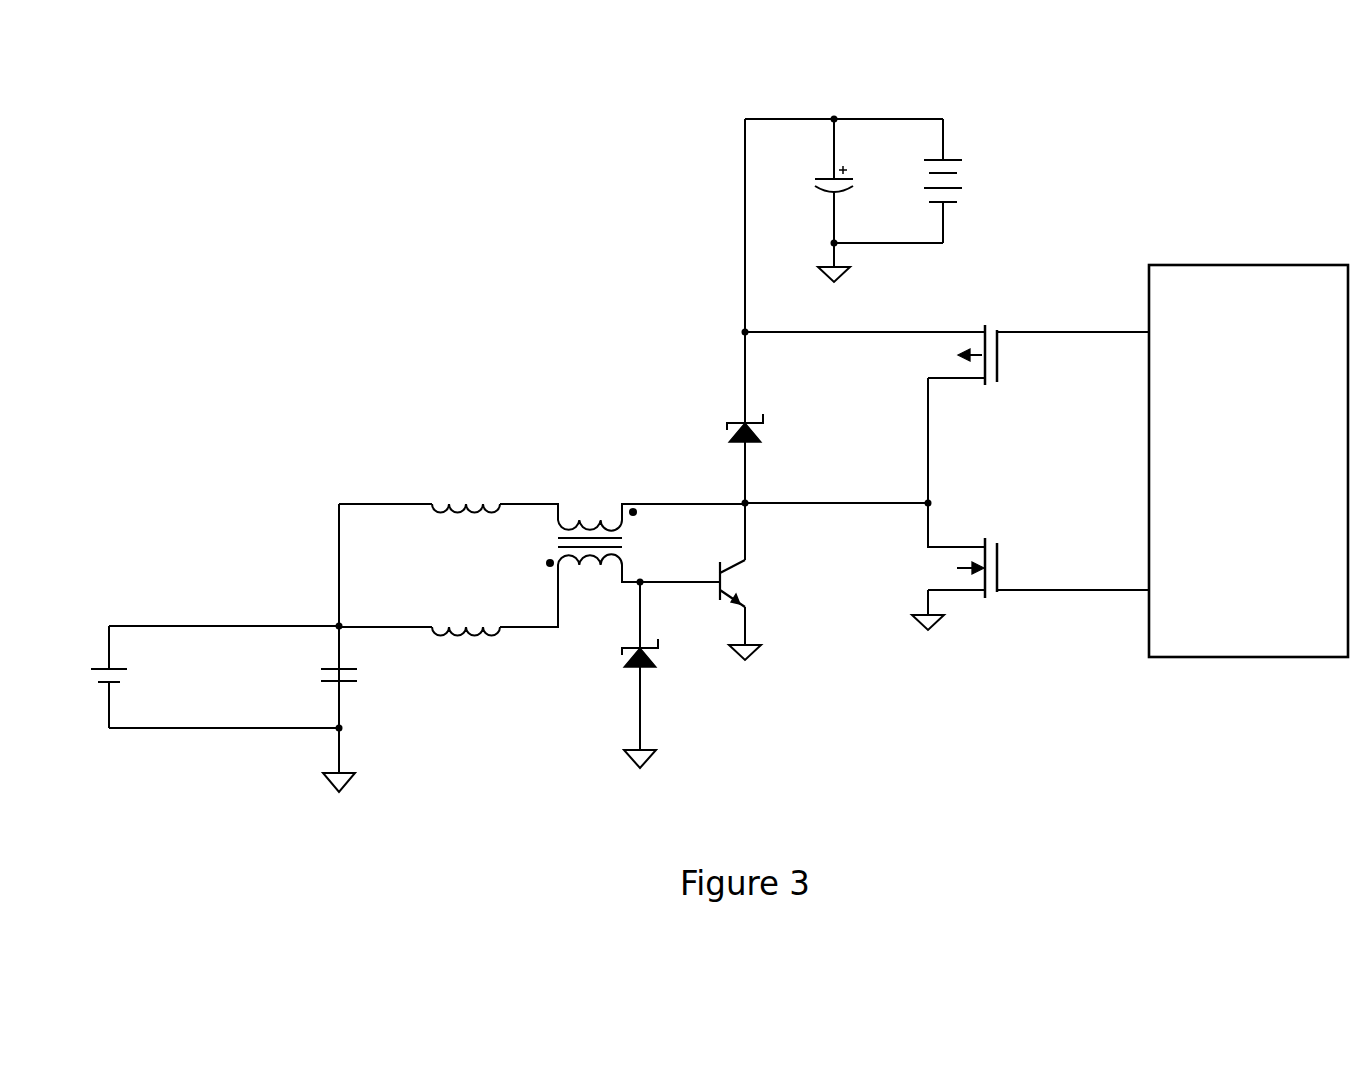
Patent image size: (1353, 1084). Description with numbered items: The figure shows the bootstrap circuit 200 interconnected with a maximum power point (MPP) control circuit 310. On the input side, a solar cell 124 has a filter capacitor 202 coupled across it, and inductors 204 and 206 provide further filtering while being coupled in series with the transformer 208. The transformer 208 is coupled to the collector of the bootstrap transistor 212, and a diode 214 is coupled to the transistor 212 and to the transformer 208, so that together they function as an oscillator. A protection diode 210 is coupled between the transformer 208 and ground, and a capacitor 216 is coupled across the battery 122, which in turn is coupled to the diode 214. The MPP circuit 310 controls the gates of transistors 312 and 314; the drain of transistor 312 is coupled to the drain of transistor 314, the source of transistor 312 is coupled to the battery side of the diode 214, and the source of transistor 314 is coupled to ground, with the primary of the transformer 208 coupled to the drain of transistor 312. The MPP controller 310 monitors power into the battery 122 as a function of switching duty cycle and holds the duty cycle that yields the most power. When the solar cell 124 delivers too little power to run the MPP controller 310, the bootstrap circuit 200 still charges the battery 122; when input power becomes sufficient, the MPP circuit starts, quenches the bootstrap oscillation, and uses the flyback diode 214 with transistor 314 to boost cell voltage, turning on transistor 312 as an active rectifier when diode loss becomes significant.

The bootstrap circuit 200 is at (290, 243).
The solar cell 124 is at (88, 675).
The filter capacitor 202 is at (317, 673).
The inductor 204 is at (453, 498).
The inductor 206 is at (462, 640).
The transformer 208 is at (615, 508).
The protection diode 210 is at (622, 652).
The transistor 212 is at (750, 603).
The diode 214 is at (738, 421).
The capacitor 216 is at (813, 187).
The battery 122 is at (965, 160).
The transistor 312 is at (1003, 357).
The transistor 314 is at (1003, 568).
The maximum power point (MPP) control circuit 310 is at (1267, 567).